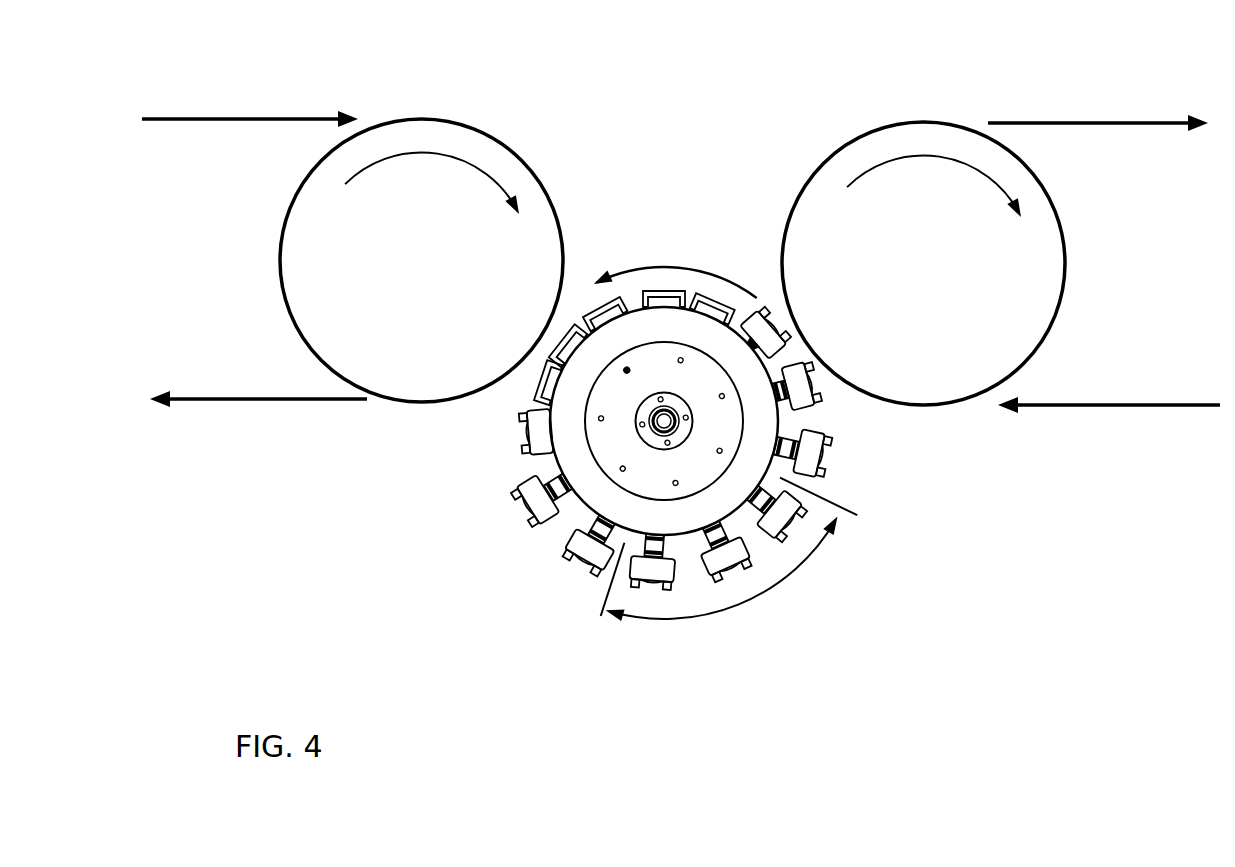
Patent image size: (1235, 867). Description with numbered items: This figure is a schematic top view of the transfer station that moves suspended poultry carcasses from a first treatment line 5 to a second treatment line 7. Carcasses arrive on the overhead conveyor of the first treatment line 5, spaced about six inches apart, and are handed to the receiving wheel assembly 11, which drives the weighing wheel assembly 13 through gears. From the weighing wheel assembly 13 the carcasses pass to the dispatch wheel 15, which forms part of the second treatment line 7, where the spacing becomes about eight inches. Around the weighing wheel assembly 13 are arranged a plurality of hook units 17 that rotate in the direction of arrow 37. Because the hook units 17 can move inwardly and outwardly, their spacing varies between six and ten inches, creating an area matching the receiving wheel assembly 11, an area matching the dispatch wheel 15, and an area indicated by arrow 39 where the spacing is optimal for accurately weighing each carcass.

The first treatment line 5 is at (228, 118).
The second treatment line 7 is at (1088, 122).
The receiving wheel assembly 11 is at (402, 320).
The weighing wheel assembly 13 is at (640, 484).
The dispatch wheel 15 is at (915, 322).
The hook units 17 is at (753, 350).
The arrow 37 is at (637, 270).
The arrow 39 is at (747, 605).